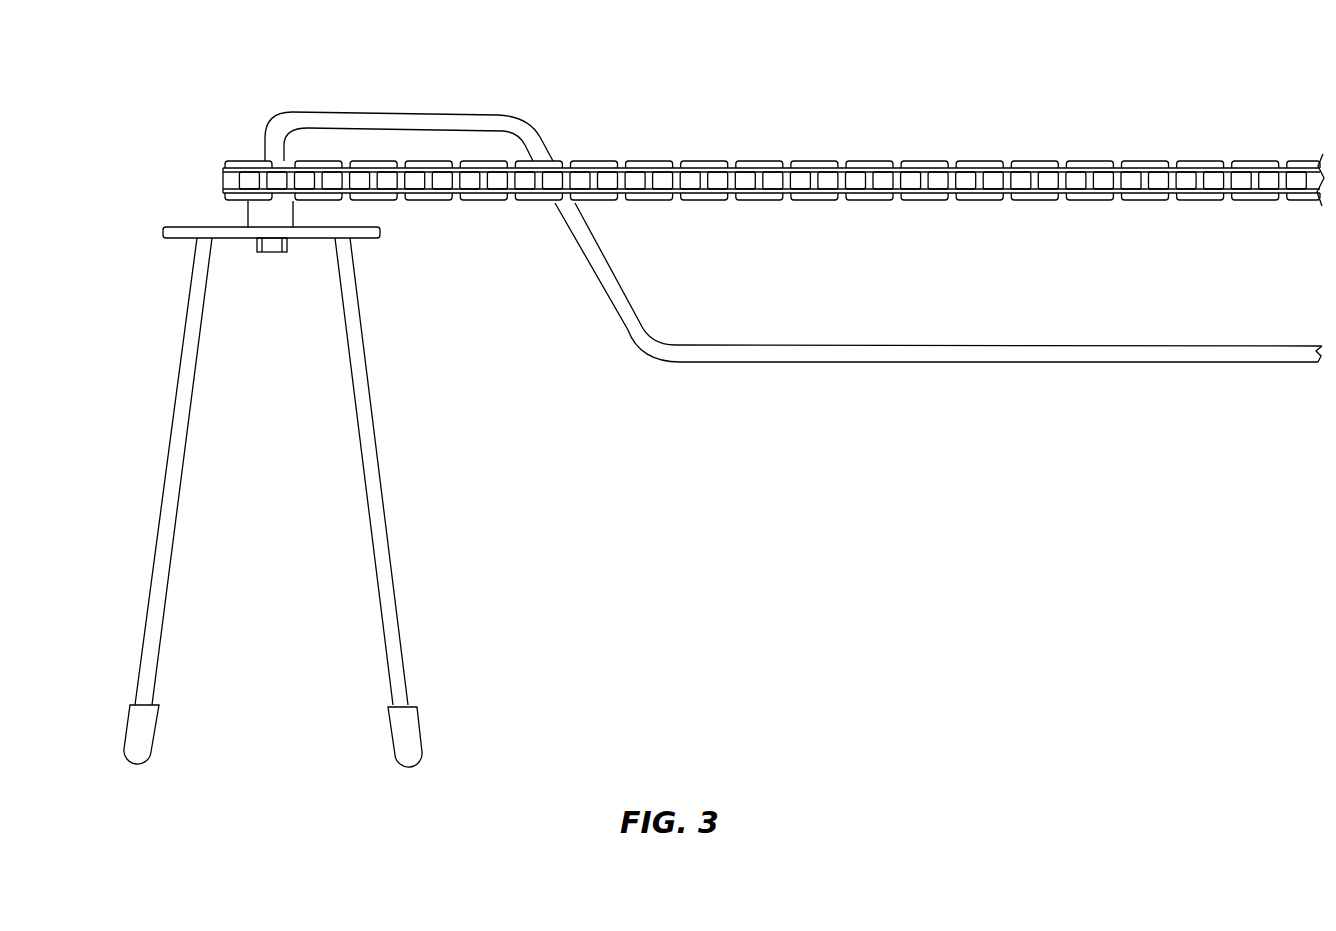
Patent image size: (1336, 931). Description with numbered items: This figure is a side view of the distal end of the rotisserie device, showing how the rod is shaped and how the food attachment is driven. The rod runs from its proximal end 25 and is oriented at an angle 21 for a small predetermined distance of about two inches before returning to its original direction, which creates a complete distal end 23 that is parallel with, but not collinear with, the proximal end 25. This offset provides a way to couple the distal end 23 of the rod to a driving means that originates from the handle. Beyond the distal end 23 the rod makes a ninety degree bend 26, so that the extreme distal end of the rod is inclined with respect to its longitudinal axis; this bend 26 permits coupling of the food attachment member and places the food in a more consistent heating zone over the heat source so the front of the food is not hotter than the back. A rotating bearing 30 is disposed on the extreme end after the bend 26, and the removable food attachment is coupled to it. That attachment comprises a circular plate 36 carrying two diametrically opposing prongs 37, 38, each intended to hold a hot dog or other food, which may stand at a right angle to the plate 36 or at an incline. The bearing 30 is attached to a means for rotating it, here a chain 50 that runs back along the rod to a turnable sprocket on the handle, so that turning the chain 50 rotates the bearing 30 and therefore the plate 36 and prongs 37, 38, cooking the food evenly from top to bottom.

The chain 50 is at (926, 160).
The ninety degree bend 26 is at (282, 130).
The distal end 23 is at (452, 120).
The angle 21 is at (645, 350).
The proximal end 25 is at (1032, 360).
The bearing 30 is at (242, 205).
The circular plate 36 is at (176, 227).
The prong 38 is at (170, 555).
The prong 37 is at (390, 560).